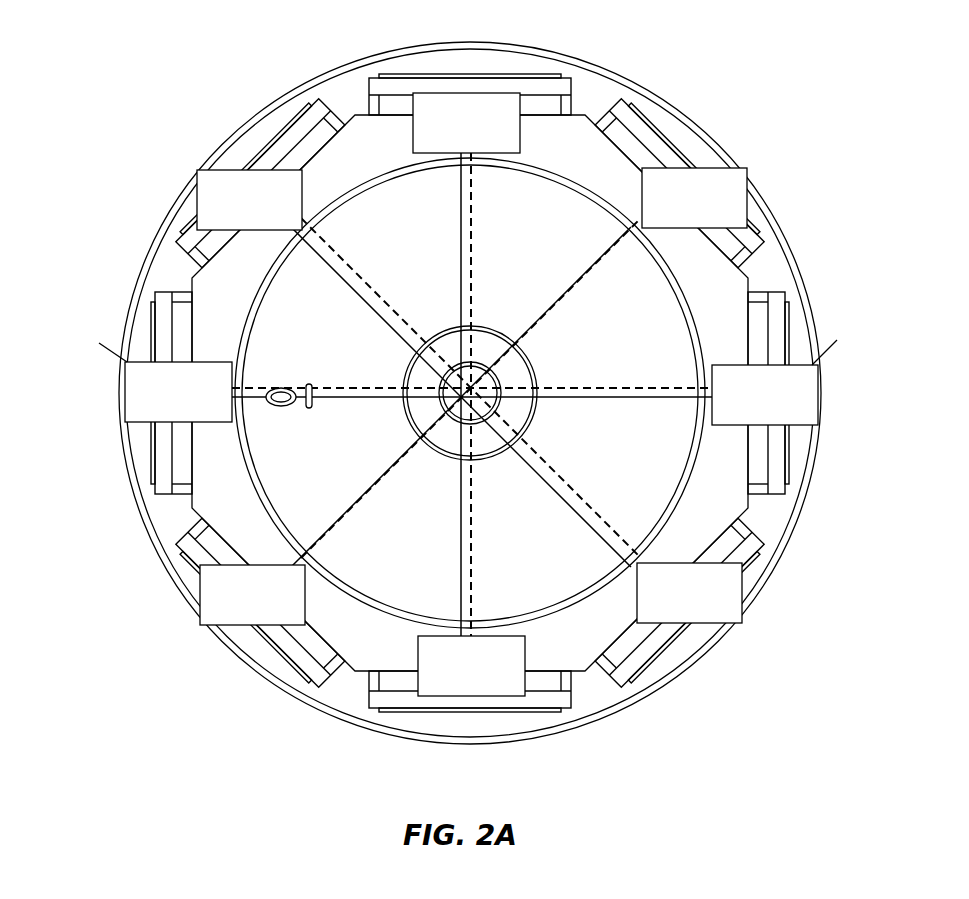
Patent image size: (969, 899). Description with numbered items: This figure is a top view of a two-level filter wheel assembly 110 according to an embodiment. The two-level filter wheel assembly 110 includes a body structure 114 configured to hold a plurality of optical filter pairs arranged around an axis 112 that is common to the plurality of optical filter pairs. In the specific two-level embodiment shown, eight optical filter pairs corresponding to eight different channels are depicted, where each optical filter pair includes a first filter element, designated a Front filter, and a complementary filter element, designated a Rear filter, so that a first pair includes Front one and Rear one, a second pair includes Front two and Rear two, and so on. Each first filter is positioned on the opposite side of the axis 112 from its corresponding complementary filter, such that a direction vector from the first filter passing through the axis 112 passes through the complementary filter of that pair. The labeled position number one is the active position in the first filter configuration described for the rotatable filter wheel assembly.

The two-level filter wheel assembly 110 is at (735, 20).
The axis 112 is at (455, 352).
The body structure 114 is at (778, 256).